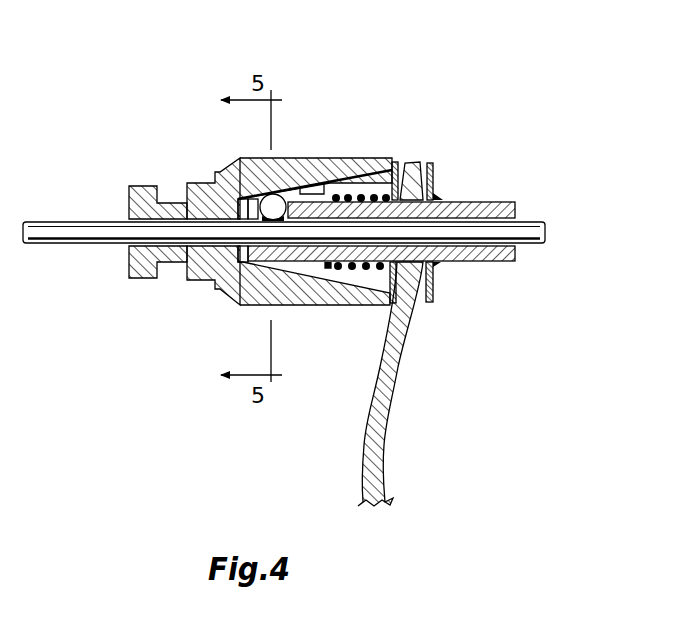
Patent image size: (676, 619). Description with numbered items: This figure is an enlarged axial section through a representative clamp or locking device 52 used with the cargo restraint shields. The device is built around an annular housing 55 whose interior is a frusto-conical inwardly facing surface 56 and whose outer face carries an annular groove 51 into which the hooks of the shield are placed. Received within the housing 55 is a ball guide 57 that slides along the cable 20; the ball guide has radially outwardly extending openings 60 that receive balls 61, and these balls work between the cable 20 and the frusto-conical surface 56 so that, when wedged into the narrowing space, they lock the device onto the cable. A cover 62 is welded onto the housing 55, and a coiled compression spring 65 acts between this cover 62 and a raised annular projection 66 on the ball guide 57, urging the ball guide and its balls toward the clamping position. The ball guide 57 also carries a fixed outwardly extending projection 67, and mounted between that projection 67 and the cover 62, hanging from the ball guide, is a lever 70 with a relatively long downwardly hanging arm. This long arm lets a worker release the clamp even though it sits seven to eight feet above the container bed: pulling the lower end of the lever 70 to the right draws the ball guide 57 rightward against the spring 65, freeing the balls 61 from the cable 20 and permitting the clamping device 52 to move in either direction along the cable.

The cable 20 is at (540, 241).
The annular groove 51 is at (173, 263).
The clamp or locking device 52 is at (167, 394).
The housing 55 is at (372, 158).
The frusto-conical interior 56 is at (317, 186).
The ball guide 57 is at (481, 202).
The openings 60 is at (277, 193).
The balls 61 is at (240, 160).
The cover 62 is at (402, 170).
The coiled compression spring 65 is at (352, 268).
The raised annular projection 66 is at (328, 186).
The projection 67 is at (433, 288).
The lever 70 is at (378, 437).